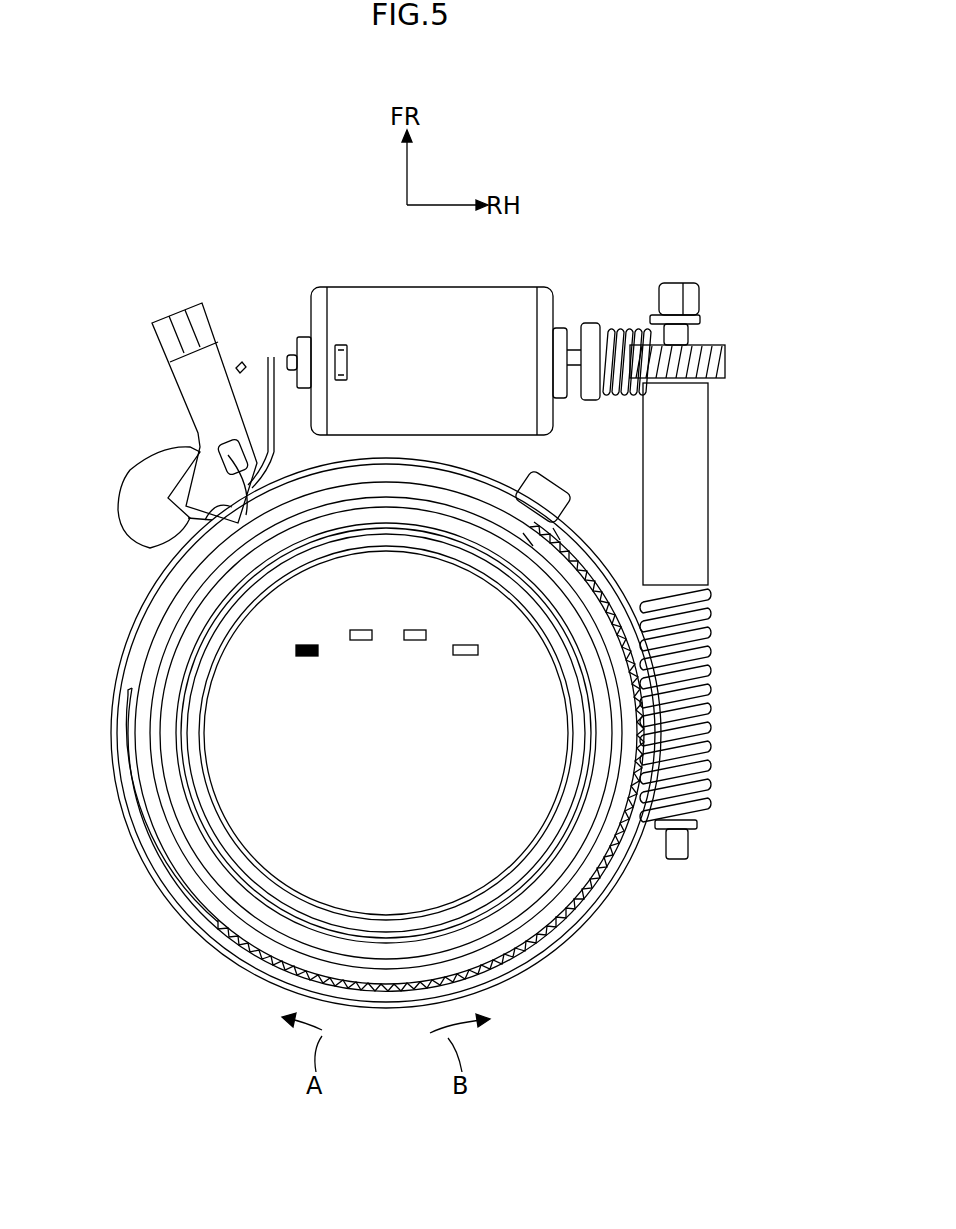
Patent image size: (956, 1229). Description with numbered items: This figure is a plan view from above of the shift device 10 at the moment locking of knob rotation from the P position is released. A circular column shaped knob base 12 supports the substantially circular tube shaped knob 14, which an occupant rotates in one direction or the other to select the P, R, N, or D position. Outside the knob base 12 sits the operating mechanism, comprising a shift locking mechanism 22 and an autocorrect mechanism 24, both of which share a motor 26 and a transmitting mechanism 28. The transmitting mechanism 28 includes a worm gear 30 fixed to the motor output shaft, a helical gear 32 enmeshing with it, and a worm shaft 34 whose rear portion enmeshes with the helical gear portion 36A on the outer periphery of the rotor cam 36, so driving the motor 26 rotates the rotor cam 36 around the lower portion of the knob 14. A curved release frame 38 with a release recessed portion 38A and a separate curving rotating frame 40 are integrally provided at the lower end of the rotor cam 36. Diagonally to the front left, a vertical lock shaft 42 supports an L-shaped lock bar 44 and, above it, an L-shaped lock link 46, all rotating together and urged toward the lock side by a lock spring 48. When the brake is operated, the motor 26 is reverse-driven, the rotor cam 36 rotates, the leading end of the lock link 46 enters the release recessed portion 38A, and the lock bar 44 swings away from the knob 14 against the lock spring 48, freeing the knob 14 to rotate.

The shift device 10 is at (192, 208).
The knob base 12 is at (246, 800).
The knob 14 is at (556, 556).
The shift locking mechanism 22 is at (103, 372).
The autocorrect mechanism 24 is at (722, 570).
The motor 26 is at (432, 287).
The transmitting mechanism 28 is at (726, 326).
The worm gear 30 is at (623, 345).
The helical gear 32 is at (724, 360).
The worm shaft 34 is at (712, 668).
The rotor cam 36 is at (354, 736).
The helical gear portion 36A is at (574, 940).
The release frame 38 is at (490, 492).
The release recessed portion 38A is at (222, 508).
The rotating frame 40 is at (118, 775).
The lock shaft 42 is at (222, 446).
The lock bar 44 is at (118, 495).
The lock link 46 is at (230, 355).
The lock spring 48 is at (282, 455).